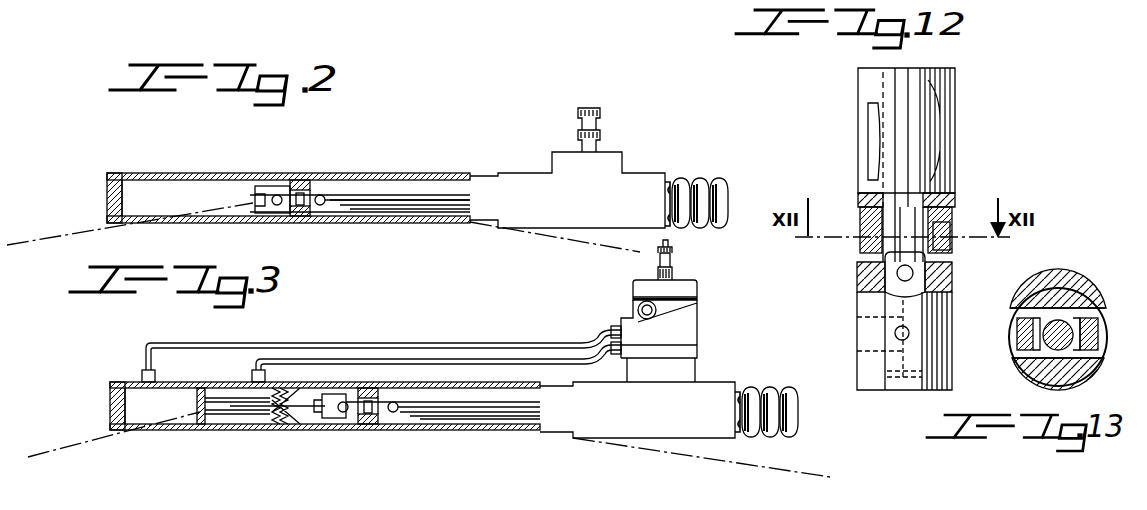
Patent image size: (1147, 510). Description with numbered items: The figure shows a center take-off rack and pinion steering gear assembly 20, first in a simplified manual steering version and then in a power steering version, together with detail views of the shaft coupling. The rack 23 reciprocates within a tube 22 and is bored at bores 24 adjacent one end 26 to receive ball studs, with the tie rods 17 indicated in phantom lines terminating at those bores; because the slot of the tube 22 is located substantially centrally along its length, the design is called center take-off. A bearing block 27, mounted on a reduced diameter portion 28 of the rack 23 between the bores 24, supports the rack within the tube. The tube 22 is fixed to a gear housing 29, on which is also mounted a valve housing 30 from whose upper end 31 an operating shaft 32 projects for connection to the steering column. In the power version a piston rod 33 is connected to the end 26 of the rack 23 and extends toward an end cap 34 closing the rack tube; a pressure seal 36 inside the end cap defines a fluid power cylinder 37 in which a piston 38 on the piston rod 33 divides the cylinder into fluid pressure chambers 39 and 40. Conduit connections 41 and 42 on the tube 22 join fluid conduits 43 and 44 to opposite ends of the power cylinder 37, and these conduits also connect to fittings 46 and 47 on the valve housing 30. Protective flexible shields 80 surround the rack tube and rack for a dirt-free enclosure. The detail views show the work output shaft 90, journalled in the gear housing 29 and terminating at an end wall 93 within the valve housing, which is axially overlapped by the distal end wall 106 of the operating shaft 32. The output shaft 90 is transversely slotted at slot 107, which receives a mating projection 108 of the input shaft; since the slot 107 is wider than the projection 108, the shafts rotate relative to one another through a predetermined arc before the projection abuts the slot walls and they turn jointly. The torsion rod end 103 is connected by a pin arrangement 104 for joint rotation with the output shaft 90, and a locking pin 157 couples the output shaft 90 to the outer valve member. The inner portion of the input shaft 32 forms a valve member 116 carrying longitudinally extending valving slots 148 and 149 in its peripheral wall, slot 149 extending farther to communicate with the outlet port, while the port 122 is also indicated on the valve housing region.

In FIG. 2, the tie rods 17 is at (60, 220).
In FIG. 3, the tie rods 17 is at (44, 458).
In FIG. 2, the rack and pinion gear assembly 20 is at (378, 176).
In FIG. 2, the tube 22 is at (418, 178).
In FIG. 3, the tube 22 is at (432, 384).
In FIG. 2, the rack 23 is at (396, 198).
In FIG. 3, the rack 23 is at (492, 402).
In FIG. 2, the bores 24 is at (277, 195).
In FIG. 3, the bores 24 is at (343, 412).
In FIG. 2, the end of rack 26 is at (262, 198).
In FIG. 3, the end of rack 26 is at (333, 396).
In FIG. 2, the bearing block 27 is at (300, 208).
In FIG. 3, the bearing block 27 is at (368, 418).
In FIG. 2, the reduced diameter portion 28 is at (300, 184).
In FIG. 3, the reduced diameter portion 28 is at (369, 392).
In FIG. 2, the gear housing 29 is at (604, 178).
In FIG. 3, the gear housing 29 is at (708, 396).
In FIG. 3, the valve housing 30 is at (700, 322).
In FIG. 3, the upper end of valve housing 31 is at (696, 292).
In FIG. 12, the upper end of valve housing 31 is at (880, 316).
In FIG. 13, the upper end of valve housing 31 is at (1046, 336).
In FIG. 2, the operating shaft 32 is at (600, 122).
In FIG. 3, the operating shaft 32 is at (678, 270).
In FIG. 12, the operating shaft 32 is at (958, 74).
In FIG. 3, the piston rod 33 is at (262, 406).
In FIG. 2, the end cap 34 is at (106, 186).
In FIG. 3, the end cap 34 is at (108, 396).
In FIG. 3, the pressure seal 36 is at (278, 428).
In FIG. 3, the fluid power cylinder 37 is at (143, 400).
In FIG. 3, the piston 38 is at (198, 412).
In FIG. 3, the fluid pressure chamber 39 is at (134, 410).
In FIG. 3, the fluid pressure chamber 40 is at (228, 414).
In FIG. 3, the conduit connection 41 is at (158, 373).
In FIG. 3, the conduit connection 42 is at (253, 372).
In FIG. 3, the fluid conduit 43 is at (346, 343).
In FIG. 3, the fluid conduit 44 is at (396, 362).
In FIG. 3, the fitting 46 is at (608, 334).
In FIG. 3, the fitting 47 is at (594, 344).
In FIG. 2, the protective flexible shields 80 is at (692, 182).
In FIG. 3, the protective flexible shields 80 is at (800, 412).
In FIG. 12, the work output shaft 90 is at (956, 310).
In FIG. 12, the end wall 93 is at (884, 214).
In FIG. 12, the end of torsion rod 103 is at (886, 350).
In FIG. 13, the end of torsion rod 103 is at (1040, 358).
In FIG. 12, the pin arrangement 104 is at (895, 333).
In FIG. 12, the distal end wall 106 is at (862, 242).
In FIG. 13, the distal end wall 106 is at (1072, 306).
In FIG. 12, the slot 107 is at (936, 214).
In FIG. 13, the slot 107 is at (1086, 314).
In FIG. 12, the projection 108 is at (944, 230).
In FIG. 13, the projection 108 is at (1022, 330).
In FIG. 12, the valve member 116 is at (856, 166).
In FIG. 3, the port 122 is at (640, 306).
In FIG. 12, the slot 148 is at (868, 130).
In FIG. 12, the slot 149 is at (946, 122).
In FIG. 12, the locking pin 157 is at (914, 273).